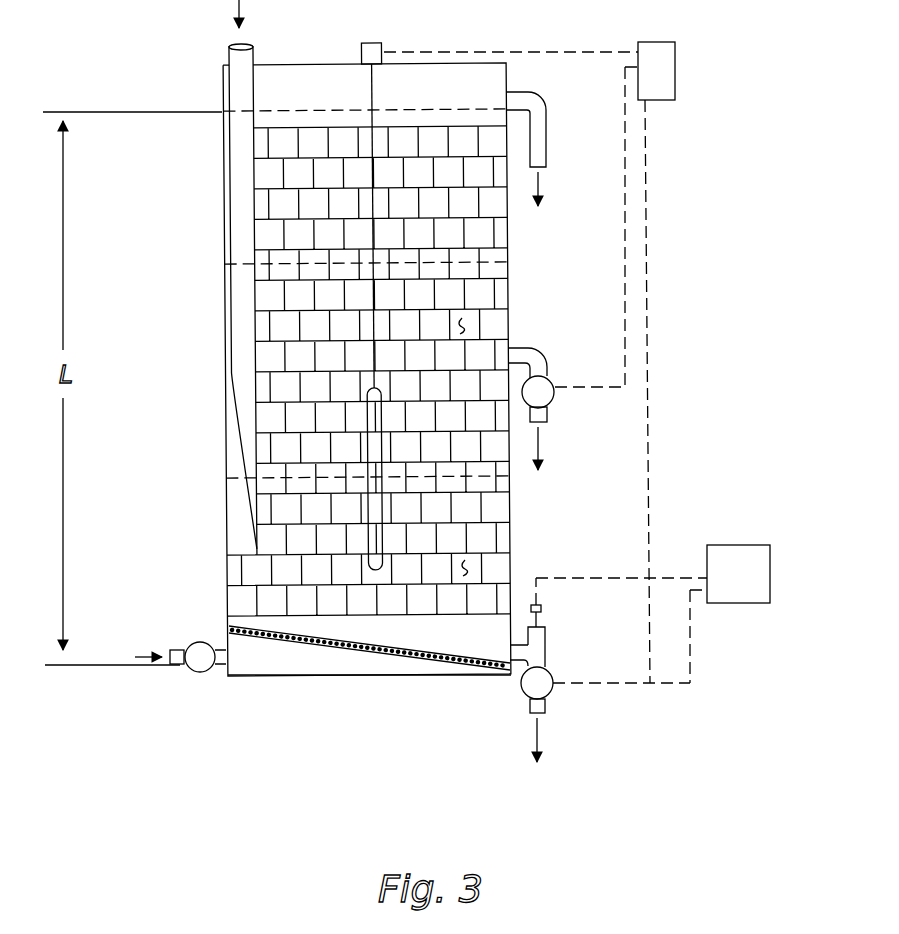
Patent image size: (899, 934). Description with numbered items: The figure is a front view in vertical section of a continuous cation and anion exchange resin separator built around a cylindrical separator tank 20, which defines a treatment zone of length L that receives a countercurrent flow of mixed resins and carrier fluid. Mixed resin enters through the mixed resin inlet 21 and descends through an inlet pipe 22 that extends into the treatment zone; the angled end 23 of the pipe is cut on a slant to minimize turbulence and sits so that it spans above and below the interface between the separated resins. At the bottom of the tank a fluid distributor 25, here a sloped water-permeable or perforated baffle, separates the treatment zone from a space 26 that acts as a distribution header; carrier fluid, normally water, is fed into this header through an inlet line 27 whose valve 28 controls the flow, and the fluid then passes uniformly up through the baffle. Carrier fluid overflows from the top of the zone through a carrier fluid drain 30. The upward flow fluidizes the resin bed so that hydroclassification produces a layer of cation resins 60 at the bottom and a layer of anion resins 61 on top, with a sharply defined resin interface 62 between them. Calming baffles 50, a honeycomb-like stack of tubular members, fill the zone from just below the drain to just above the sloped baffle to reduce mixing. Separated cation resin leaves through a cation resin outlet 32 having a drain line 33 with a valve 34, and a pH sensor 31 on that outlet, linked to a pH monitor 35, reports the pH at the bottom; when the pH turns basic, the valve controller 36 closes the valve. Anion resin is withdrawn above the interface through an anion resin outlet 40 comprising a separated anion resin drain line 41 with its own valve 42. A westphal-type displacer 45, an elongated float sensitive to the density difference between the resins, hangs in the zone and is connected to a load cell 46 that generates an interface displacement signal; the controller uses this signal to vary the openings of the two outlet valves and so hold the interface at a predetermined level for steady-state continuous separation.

The cylindrical separator tank 20 is at (224, 298).
The mixed resin inlet 21 is at (255, 52).
The inlet pipe 22 is at (240, 189).
The angled end of the inlet pipe 23 is at (258, 462).
The fluid distributor 25 is at (268, 637).
The space 26 is at (297, 667).
The inlet line 27 is at (173, 648).
The valve 28 is at (200, 642).
The carrier fluid drain 30 is at (547, 135).
The pH sensor 31 is at (540, 617).
The cation resin outlet 32 is at (547, 648).
The drain line 33 is at (530, 707).
The valve 34 is at (554, 690).
The pH monitor 35 is at (745, 545).
The valve controller 36 is at (677, 70).
The anion resin outlet 40 is at (537, 350).
The separated anion resin drain line 41 is at (548, 422).
The valve 42 is at (555, 398).
The westphal-type displacer 45 is at (372, 388).
The load cell 46 is at (383, 46).
The calming baffles 50 is at (465, 292).
The layer of cation resins 60 is at (472, 568).
The layer of anion resins 61 is at (470, 320).
The resin interface 62 is at (506, 478).